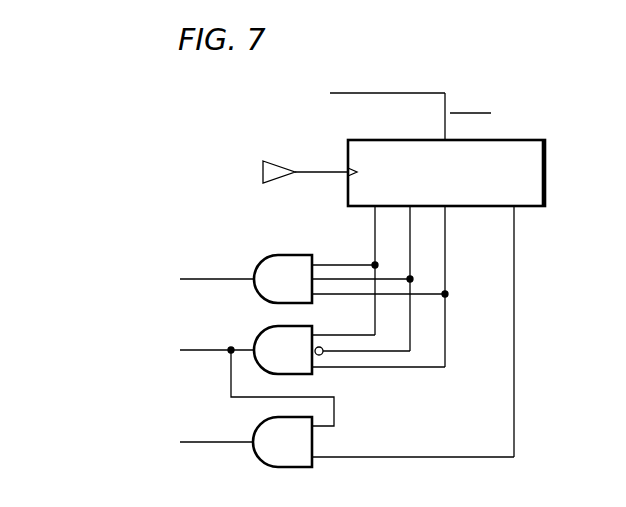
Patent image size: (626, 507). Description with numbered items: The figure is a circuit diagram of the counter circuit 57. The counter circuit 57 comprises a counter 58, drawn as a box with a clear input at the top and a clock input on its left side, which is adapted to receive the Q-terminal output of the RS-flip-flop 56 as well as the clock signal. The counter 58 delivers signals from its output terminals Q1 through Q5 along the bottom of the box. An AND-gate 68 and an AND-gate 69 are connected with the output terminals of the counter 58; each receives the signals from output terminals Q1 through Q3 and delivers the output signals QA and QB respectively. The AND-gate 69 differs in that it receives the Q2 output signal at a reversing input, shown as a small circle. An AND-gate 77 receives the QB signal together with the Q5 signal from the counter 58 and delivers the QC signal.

The RS-flip-flop 56 is at (322, 89).
The counter circuit 57 is at (521, 138).
The counter 58 is at (515, 177).
The AND-gate 68 is at (270, 259).
The AND-gate 69 is at (270, 329).
The AND-gate 77 is at (270, 468).